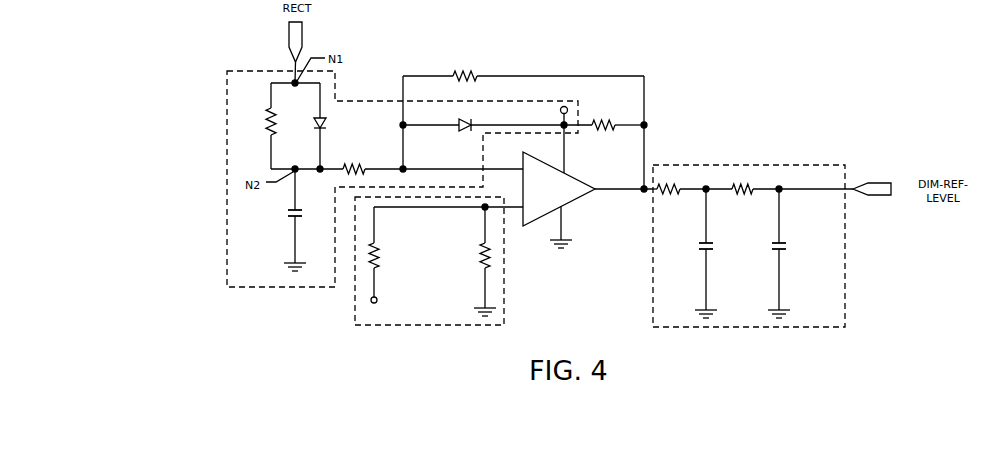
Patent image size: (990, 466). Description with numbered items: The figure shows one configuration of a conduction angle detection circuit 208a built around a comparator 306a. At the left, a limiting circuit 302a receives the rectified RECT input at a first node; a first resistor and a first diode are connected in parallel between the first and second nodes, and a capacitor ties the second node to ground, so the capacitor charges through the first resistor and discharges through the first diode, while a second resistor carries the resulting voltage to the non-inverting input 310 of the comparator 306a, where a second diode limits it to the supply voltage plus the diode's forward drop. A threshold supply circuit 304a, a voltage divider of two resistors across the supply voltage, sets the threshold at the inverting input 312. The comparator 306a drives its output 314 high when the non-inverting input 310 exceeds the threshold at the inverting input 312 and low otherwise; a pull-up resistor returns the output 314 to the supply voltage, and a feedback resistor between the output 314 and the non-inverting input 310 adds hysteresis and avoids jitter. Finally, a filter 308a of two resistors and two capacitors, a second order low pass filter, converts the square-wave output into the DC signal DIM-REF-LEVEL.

The conduction angle detection circuit 208a is at (508, 27).
The limiting circuit 302a is at (414, 161).
The threshold supply circuit 304a is at (429, 278).
The comparator 306a is at (590, 214).
The filter 308a is at (753, 224).
The non-inverting input 310 is at (481, 153).
The inverting input 312 is at (524, 239).
The output 314 is at (616, 134).